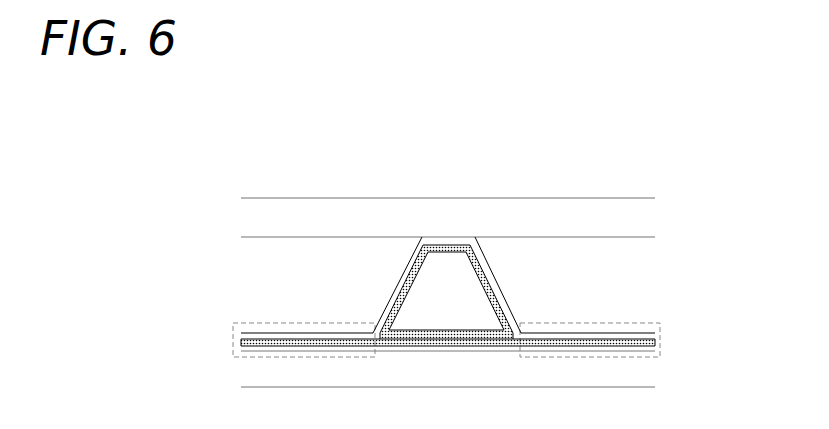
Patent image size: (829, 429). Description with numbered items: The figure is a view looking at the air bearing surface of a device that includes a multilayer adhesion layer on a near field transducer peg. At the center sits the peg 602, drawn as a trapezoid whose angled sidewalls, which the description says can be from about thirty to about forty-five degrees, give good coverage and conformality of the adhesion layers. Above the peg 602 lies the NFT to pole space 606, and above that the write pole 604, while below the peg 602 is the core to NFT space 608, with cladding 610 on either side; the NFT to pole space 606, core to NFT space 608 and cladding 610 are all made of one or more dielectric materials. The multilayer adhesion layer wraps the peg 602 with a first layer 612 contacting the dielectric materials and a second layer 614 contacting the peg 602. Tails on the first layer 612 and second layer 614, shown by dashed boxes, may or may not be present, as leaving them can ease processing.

The peg 602 is at (473, 307).
The write pole 604 is at (463, 127).
The NFT to pole space (NPS) 606 is at (338, 228).
The core to NFT space (CNS) 608 is at (335, 379).
The cladding 610 is at (326, 299).
The first layer 612 is at (491, 274).
The second layer 614 is at (540, 333).